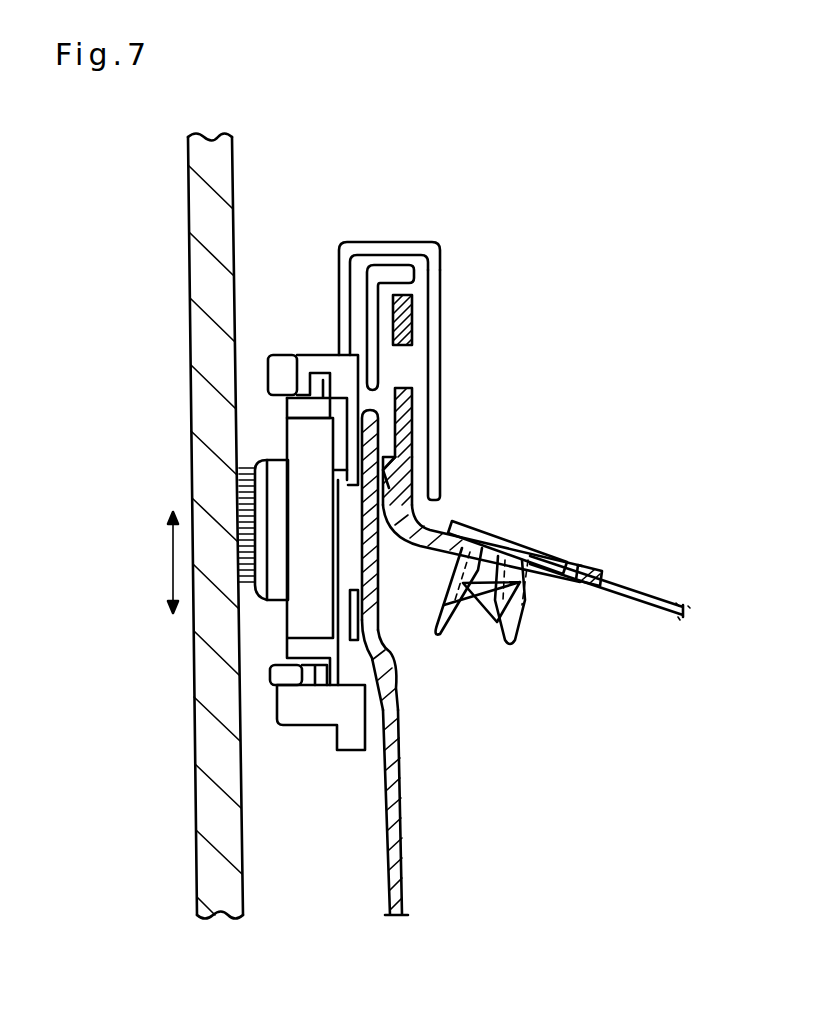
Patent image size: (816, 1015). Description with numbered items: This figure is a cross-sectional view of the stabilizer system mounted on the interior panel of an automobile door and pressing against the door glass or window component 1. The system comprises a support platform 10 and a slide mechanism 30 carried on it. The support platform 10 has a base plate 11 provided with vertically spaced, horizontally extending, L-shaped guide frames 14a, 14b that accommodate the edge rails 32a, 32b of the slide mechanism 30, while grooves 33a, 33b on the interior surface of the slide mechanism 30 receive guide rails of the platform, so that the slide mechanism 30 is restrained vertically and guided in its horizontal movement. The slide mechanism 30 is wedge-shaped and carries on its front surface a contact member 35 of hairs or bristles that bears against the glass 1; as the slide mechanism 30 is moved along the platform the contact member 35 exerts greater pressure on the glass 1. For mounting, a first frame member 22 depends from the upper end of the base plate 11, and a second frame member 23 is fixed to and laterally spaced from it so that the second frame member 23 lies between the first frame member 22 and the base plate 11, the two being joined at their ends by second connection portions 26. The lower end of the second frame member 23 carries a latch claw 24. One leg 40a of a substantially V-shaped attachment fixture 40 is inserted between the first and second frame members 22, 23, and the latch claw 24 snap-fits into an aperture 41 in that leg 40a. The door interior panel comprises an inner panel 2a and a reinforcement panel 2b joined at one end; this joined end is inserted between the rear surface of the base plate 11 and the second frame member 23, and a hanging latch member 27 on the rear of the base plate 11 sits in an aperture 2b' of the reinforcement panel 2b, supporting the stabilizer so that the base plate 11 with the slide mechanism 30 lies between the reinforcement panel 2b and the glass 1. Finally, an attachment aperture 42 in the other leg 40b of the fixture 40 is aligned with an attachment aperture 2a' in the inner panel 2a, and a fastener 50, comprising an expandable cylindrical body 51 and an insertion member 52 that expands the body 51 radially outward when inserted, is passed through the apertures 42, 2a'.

The automobile door glass or window component 1 is at (196, 263).
The support platform 10 is at (400, 371).
The base plate 11 is at (348, 406).
The guide frame 14a is at (283, 355).
The guide frame 14b is at (264, 688).
The first frame member 22 is at (420, 446).
The second frame member 23 is at (387, 428).
The latch claw 24 is at (398, 470).
The second connection portion 26 is at (403, 368).
The hanging latch member 27 is at (397, 675).
The inner panel 2a is at (610, 611).
The attachment aperture 2a' is at (556, 606).
The reinforcement panel 2b is at (418, 662).
The aperture 2b' is at (401, 520).
The slide mechanism 30 is at (239, 557).
The edge rail 32a is at (318, 383).
The edge rail 32b is at (313, 685).
The groove 33a is at (347, 478).
The groove 33b is at (338, 578).
The contact member 35 is at (187, 582).
The attachment fixture 40 is at (546, 434).
The leg 40a is at (408, 325).
The leg 40b is at (583, 573).
The aperture 41 is at (407, 486).
The attachment aperture 42 is at (530, 542).
The fastener 50 is at (540, 604).
The expandable cylindrical body 51 is at (525, 632).
The insertion member 52 is at (495, 636).